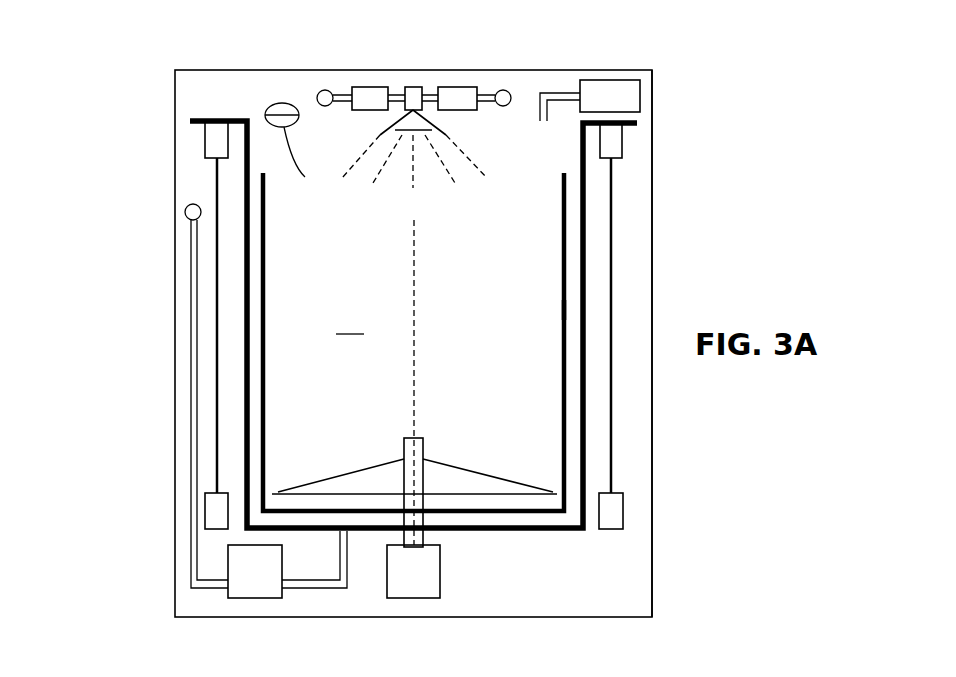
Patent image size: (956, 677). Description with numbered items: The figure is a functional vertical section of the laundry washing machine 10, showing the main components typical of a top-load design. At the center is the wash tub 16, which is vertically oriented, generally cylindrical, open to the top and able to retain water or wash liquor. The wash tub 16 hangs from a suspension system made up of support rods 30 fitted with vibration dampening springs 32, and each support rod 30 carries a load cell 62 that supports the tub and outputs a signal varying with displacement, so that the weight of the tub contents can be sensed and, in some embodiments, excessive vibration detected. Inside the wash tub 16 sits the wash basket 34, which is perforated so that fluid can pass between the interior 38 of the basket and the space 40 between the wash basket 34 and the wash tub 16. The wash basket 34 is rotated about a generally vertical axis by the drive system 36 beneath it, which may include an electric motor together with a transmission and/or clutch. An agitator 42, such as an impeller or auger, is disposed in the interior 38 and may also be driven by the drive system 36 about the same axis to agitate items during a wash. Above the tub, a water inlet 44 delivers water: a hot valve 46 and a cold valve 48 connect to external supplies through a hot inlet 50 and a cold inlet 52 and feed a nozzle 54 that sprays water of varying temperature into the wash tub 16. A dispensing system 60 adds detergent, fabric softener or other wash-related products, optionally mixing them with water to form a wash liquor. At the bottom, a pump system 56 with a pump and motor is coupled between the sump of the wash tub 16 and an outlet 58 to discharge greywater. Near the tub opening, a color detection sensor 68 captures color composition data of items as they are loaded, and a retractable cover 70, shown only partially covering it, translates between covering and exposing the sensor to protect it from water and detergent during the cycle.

The laundry washing machine 10 is at (105, 129).
The wash tub 16 is at (585, 280).
The support rods 30 is at (216, 375).
The vibration dampening springs 32 is at (205, 507).
The wash basket 34 is at (562, 215).
The drive system 36 is at (440, 588).
The interior 38 is at (375, 328).
The space 40 is at (572, 310).
The agitator 42 is at (378, 460).
The water inlet 44 is at (268, 85).
The hot valve 46 is at (378, 87).
The cold valve 48 is at (465, 87).
The hot inlet 50 is at (323, 90).
The cold inlet 52 is at (510, 90).
The nozzle 54 is at (383, 131).
The pump system 56 is at (257, 598).
The outlet 58 is at (185, 216).
The dispensing system 60 is at (618, 80).
The load cell 62 is at (205, 142).
The color detection sensor 68 is at (310, 154).
The retractable cover 70 is at (277, 100).